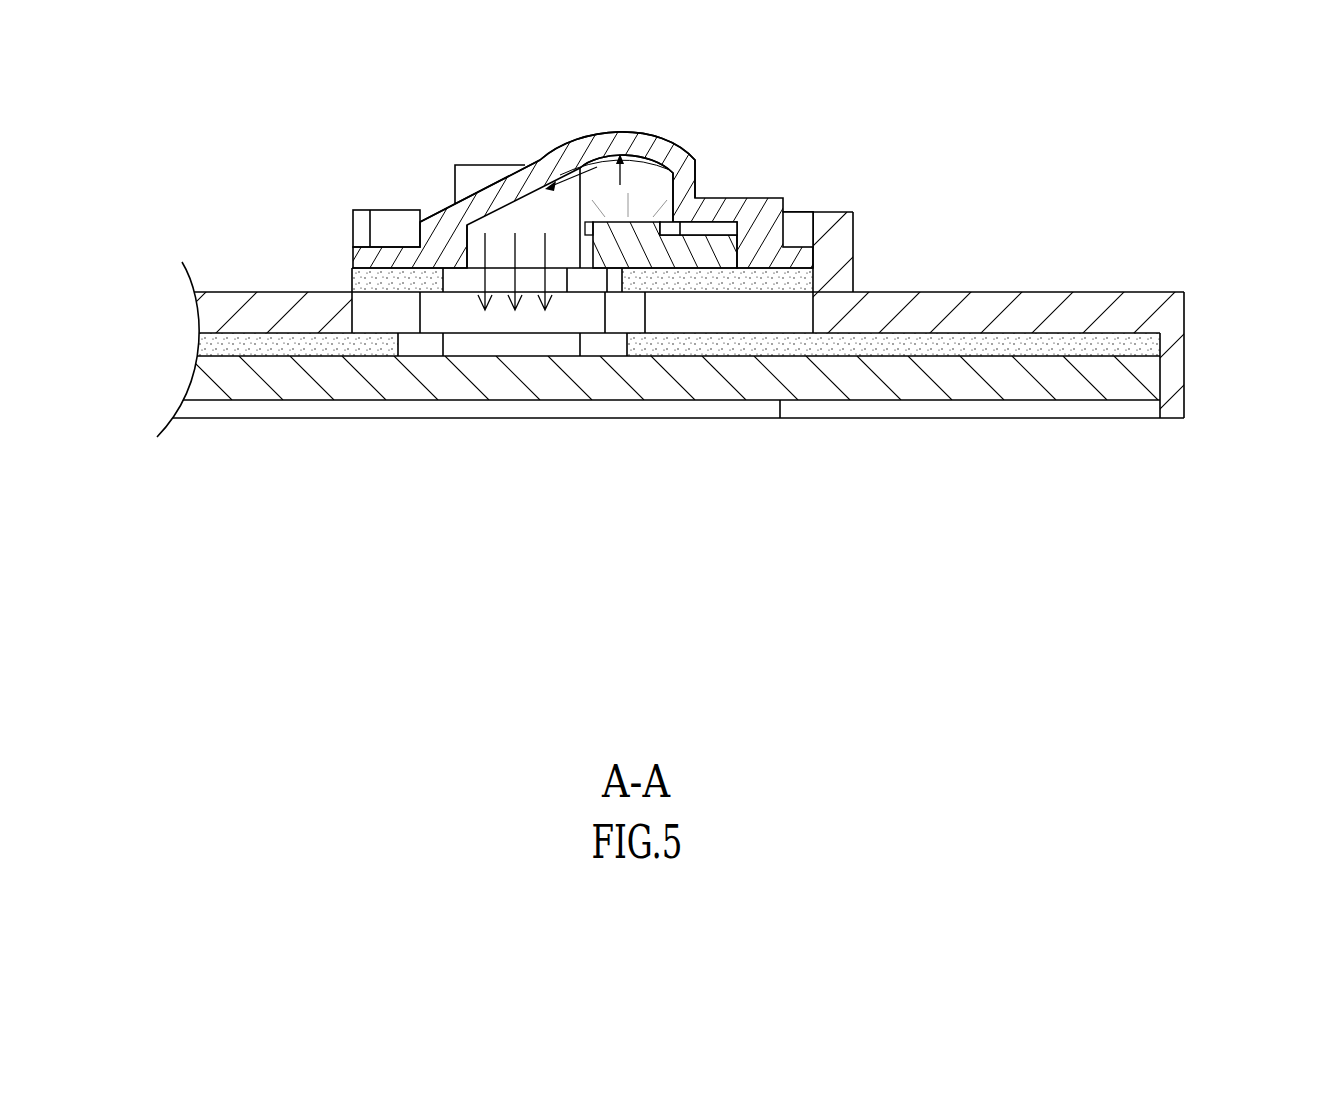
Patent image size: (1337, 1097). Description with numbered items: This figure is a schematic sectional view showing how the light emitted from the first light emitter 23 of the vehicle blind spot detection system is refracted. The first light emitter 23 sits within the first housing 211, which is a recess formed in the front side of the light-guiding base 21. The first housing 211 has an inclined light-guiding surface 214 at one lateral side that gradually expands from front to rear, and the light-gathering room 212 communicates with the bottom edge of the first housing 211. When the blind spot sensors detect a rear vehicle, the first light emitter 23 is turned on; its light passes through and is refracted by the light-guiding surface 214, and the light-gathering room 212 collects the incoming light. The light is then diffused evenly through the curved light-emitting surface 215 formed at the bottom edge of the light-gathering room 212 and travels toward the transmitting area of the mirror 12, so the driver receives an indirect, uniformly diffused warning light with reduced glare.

The mirror 12 is at (1133, 378).
The light-guiding base 21 is at (355, 255).
The first housing 211 is at (607, 155).
The light-gathering room 212 is at (455, 200).
The light-guiding surface 214 is at (678, 147).
The curved light-emitting surface 215 is at (525, 208).
The first light emitter 23 is at (668, 213).